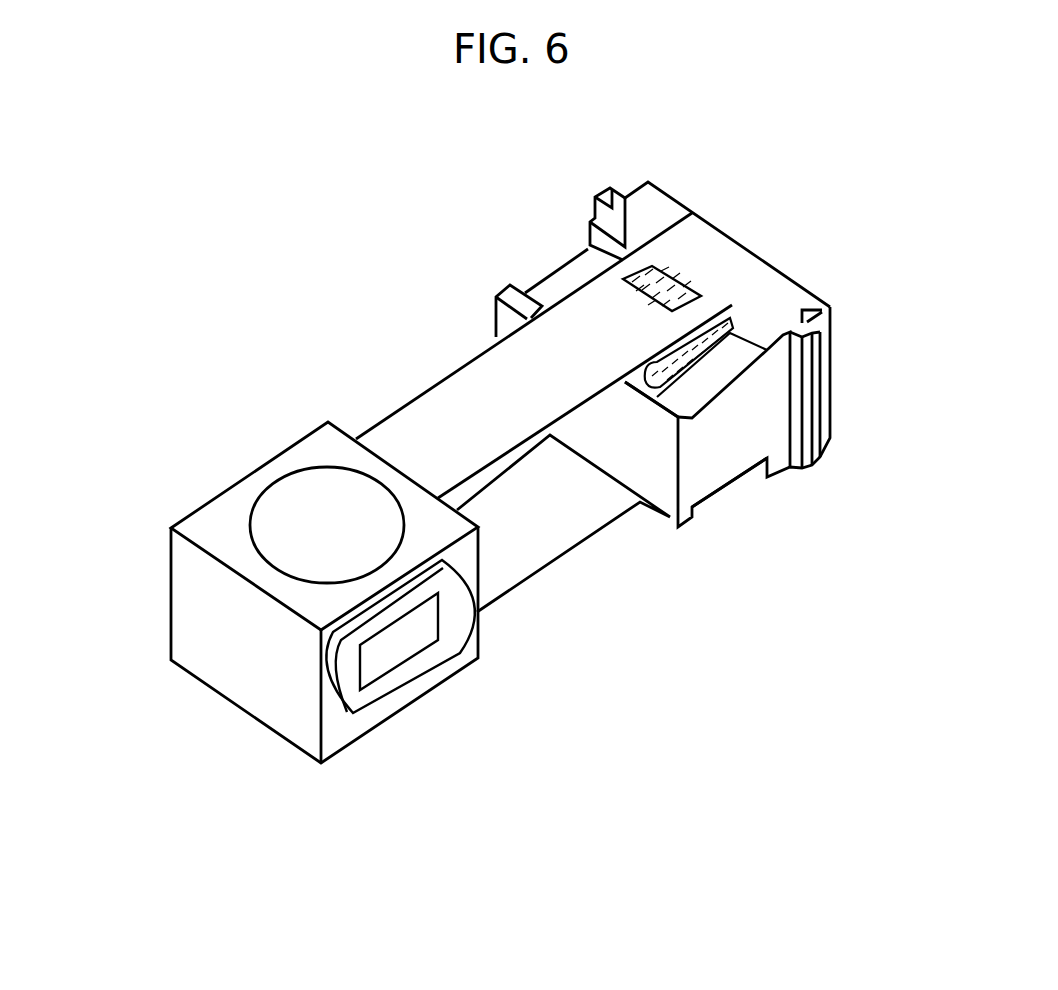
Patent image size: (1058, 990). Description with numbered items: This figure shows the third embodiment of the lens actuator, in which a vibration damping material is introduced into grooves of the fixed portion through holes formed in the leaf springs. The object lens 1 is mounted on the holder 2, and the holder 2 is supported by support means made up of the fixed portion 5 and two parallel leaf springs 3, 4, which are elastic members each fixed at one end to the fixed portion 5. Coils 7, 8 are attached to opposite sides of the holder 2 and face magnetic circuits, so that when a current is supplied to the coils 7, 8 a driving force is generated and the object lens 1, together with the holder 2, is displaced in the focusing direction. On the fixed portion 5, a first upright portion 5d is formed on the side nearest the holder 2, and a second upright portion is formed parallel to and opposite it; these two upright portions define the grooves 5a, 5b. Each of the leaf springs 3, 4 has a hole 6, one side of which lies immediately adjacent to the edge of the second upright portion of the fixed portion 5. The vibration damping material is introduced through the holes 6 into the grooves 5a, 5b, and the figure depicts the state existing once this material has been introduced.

The object lens 1 is at (302, 496).
The holder 2 is at (226, 645).
The leaf spring 3 is at (487, 408).
The leaf spring 4 is at (554, 572).
The fixed portion 5 is at (785, 406).
The groove 5a is at (723, 370).
The groove 5b is at (723, 491).
The first upright portion 5d is at (647, 396).
The hole 6 is at (677, 279).
The coil 7 is at (356, 704).
The coil 8 is at (273, 565).